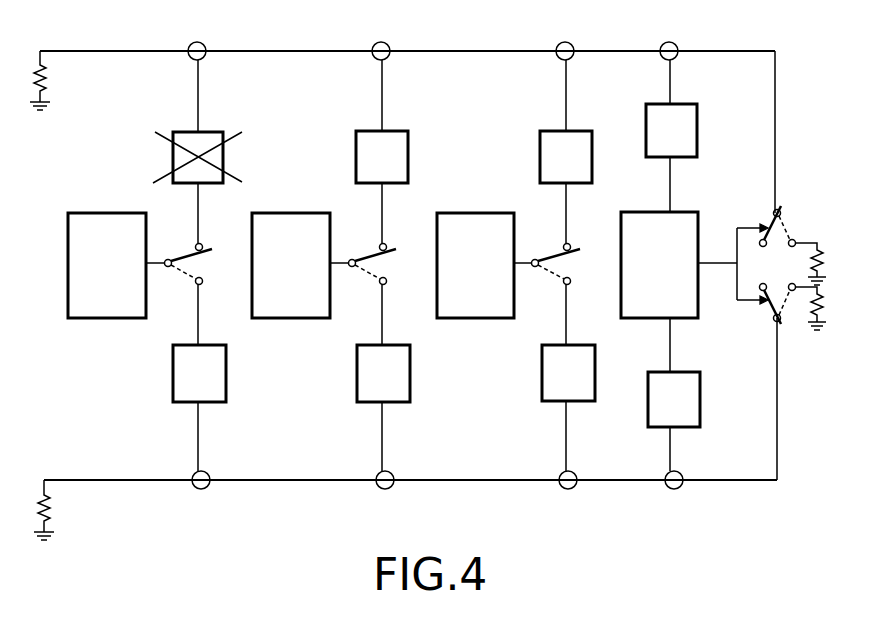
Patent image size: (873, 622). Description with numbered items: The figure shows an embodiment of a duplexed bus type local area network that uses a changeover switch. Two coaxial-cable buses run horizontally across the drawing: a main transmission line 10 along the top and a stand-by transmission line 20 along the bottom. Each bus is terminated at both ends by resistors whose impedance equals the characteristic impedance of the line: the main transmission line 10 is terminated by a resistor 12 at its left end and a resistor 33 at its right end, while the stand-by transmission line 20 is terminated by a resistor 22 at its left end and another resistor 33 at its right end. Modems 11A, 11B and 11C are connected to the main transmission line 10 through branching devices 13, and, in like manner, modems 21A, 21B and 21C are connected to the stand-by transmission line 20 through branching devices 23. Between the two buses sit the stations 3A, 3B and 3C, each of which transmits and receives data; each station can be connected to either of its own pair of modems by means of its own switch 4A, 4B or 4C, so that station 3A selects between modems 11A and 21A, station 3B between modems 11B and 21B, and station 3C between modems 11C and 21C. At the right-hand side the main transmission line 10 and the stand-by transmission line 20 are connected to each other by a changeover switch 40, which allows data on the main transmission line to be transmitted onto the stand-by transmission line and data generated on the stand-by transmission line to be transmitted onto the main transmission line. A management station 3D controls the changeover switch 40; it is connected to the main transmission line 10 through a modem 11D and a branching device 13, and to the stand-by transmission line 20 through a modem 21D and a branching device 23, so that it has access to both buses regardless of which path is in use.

The main transmission line 10 is at (149, 50).
The branching device 13 is at (204, 45).
The resistor 12 is at (48, 75).
The stand-by transmission line 20 is at (478, 482).
The resistor 22 is at (48, 508).
The branching device 23 is at (201, 489).
The modem 11A is at (222, 130).
The modem 11B is at (408, 140).
The modem 11C is at (591, 132).
The modem 11D is at (697, 120).
The station 3A is at (107, 212).
The station 3B is at (288, 212).
The station 3C is at (470, 212).
The management station 3D is at (652, 212).
The switch 4A is at (182, 256).
The switch 4B is at (364, 255).
The switch 4C is at (554, 233).
The modem 21A is at (185, 402).
The modem 21B is at (372, 402).
The modem 21C is at (557, 402).
The modem 21D is at (659, 427).
The changeover switch 40 is at (770, 222).
The resistor 33 is at (820, 252).